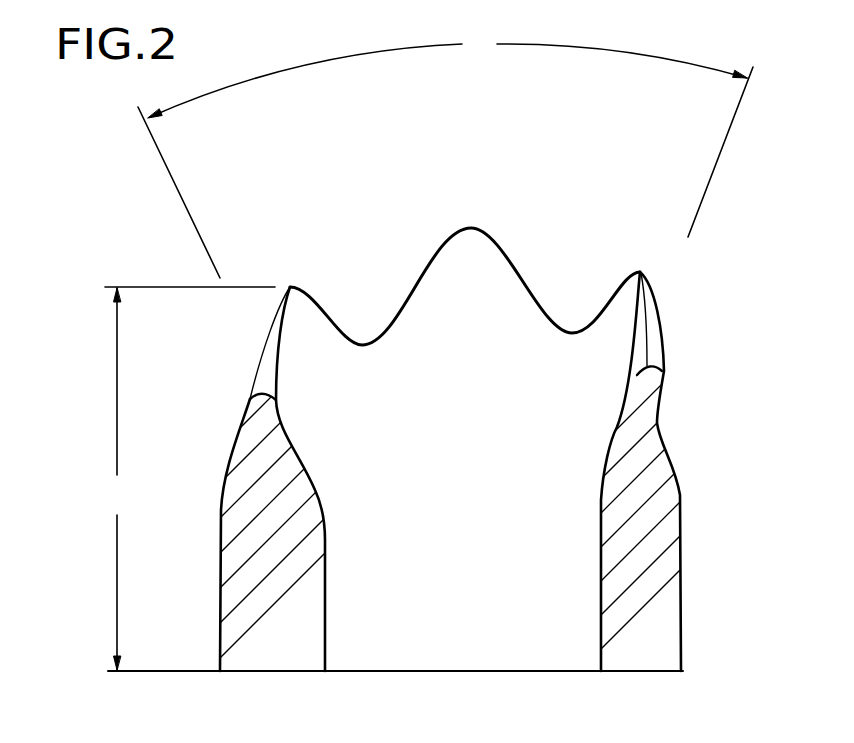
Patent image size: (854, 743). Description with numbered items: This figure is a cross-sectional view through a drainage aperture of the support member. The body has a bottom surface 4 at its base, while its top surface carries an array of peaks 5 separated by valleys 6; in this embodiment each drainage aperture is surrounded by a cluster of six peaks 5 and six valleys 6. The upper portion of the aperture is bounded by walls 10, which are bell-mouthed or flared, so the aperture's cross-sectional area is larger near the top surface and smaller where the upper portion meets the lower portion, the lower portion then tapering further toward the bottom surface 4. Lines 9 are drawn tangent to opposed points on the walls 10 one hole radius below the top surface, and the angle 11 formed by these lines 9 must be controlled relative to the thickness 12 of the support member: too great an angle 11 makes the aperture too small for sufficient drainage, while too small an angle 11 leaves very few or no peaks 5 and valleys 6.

The bottom surface 4 is at (263, 672).
The peaks 5 is at (290, 286).
The valleys 6 is at (255, 396).
The lines 9 is at (168, 175).
The wall 10 is at (310, 470).
The angle 11 is at (447, 73).
The thickness 12 is at (189, 478).